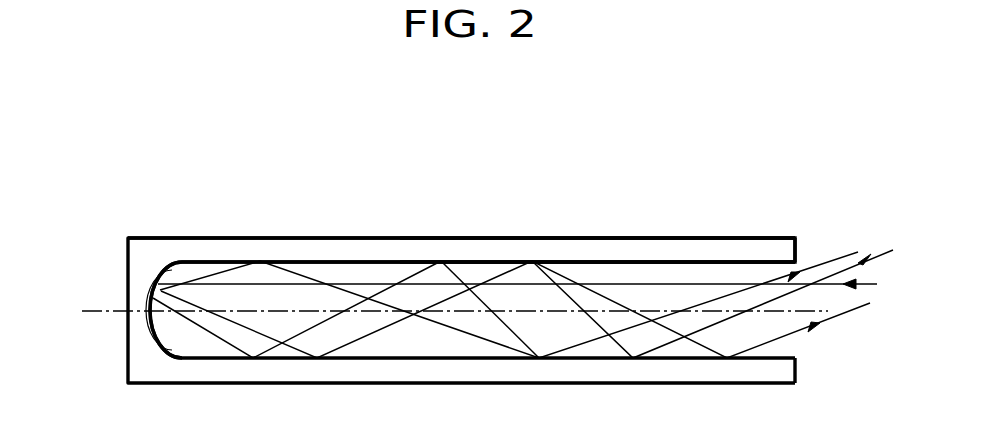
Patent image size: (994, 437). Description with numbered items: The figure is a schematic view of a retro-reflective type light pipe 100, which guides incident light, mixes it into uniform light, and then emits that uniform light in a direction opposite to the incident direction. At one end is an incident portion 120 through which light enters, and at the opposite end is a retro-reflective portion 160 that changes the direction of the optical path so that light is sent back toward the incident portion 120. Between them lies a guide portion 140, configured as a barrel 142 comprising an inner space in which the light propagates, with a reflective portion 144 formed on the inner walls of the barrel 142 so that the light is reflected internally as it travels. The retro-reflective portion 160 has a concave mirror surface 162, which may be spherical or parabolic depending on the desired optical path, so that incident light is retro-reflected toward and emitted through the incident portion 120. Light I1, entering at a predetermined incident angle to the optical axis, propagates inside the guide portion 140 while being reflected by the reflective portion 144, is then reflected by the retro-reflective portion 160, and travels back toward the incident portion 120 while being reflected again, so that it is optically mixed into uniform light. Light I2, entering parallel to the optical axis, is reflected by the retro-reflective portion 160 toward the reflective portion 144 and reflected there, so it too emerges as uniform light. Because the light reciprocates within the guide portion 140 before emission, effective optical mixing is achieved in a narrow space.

The retro-reflective type light pipe 100 is at (817, 170).
The incident portion 120 is at (785, 351).
The guide portion 140 is at (707, 237).
The barrel 142 is at (592, 250).
The reflective portion 144 is at (625, 266).
The retro-reflective portion 160 is at (150, 280).
The concave mirror surface 162 is at (160, 334).
The light having a predetermined incident angle I1 is at (534, 293).
The light incident in parallel with the optical axis I2 is at (529, 309).